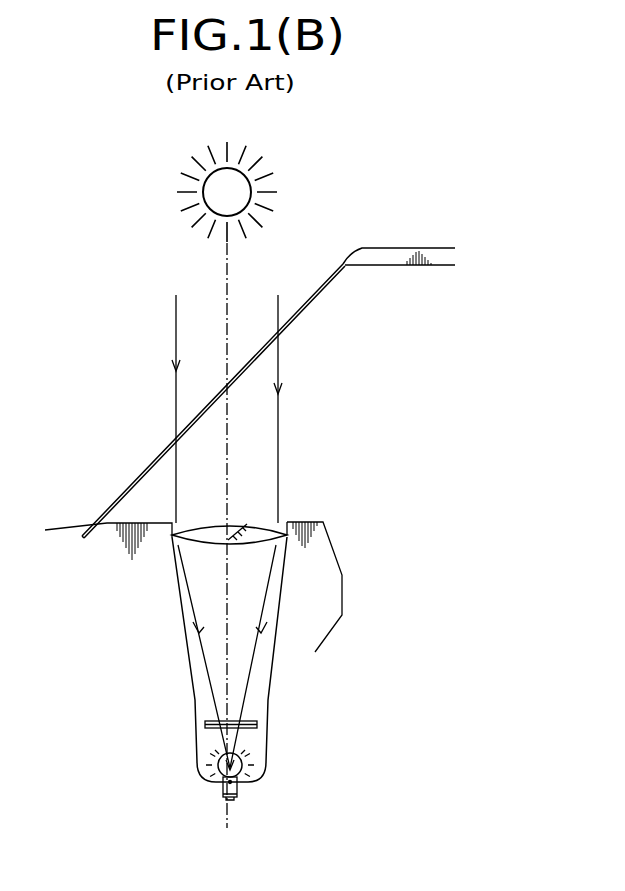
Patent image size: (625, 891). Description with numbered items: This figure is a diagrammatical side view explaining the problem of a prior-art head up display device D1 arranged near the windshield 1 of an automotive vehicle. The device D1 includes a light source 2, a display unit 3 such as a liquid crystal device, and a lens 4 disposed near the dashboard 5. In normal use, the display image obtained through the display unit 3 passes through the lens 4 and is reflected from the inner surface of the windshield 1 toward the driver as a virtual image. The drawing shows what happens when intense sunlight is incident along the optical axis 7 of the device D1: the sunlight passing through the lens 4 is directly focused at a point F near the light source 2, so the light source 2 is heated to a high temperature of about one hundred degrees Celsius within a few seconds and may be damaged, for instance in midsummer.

The windshield 1 is at (312, 297).
The optical axis 7 is at (232, 432).
The lens 4 is at (258, 532).
The dashboard 5 is at (313, 520).
The display unit 3 is at (211, 712).
The head up display device D1 is at (266, 684).
The focus point F is at (226, 785).
The light source 2 is at (240, 789).